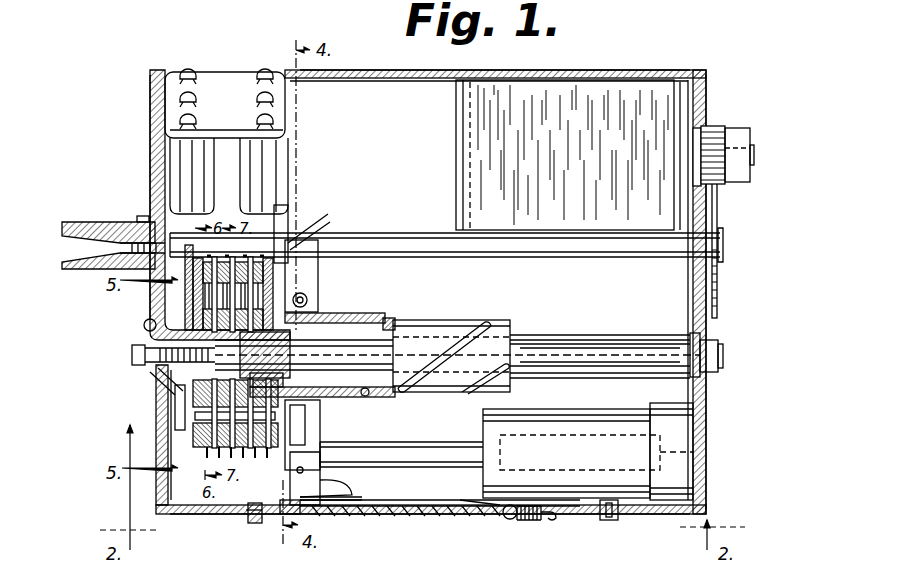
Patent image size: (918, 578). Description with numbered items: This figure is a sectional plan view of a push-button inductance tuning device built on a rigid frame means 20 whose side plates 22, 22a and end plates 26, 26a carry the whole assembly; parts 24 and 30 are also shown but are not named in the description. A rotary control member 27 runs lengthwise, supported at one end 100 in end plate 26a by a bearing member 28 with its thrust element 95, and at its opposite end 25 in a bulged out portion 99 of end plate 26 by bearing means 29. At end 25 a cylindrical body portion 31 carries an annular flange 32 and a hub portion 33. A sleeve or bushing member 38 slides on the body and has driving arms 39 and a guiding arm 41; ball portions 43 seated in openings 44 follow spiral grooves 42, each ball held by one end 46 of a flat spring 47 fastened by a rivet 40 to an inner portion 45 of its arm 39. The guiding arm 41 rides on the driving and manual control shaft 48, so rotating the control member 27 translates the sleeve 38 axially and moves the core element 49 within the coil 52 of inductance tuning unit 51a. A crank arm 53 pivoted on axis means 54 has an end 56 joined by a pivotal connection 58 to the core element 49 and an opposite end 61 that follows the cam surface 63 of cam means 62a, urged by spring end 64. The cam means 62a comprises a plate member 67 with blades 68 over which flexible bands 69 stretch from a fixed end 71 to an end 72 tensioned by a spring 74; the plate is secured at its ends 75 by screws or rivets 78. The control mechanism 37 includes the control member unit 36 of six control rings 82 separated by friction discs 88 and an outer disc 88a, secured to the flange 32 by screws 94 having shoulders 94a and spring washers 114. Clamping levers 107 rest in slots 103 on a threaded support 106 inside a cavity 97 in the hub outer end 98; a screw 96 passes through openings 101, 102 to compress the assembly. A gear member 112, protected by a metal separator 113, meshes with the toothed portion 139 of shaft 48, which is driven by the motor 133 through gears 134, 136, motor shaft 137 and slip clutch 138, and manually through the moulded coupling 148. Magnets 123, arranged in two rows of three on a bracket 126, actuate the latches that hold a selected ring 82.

The frame means 20 is at (707, 445).
The side plate 22 is at (648, 515).
The side plate 22a is at (545, 72).
The wall 24 is at (708, 94).
The end of control member 25 is at (322, 313).
The end plate 26 is at (151, 168).
The end plate 26a is at (707, 288).
The rotary control member 27 is at (562, 310).
The bearing member 28 is at (712, 342).
The bearing means 29 is at (175, 398).
The bushing 30 is at (345, 312).
The cylindrical body portion 31 is at (408, 300).
The annular flange 32 is at (318, 232).
The hub portion 33 is at (457, 355).
The control member unit 36 is at (250, 458).
The control mechanism 37 is at (290, 215).
The sleeve or bushing member 38 is at (308, 298).
The driving arm 39 is at (318, 430).
The rivet 40 is at (300, 390).
The guiding arm 41 is at (318, 272).
The spirally extending grooves 42 is at (492, 322).
The ball portion 43 is at (372, 396).
The recess or opening 44 is at (368, 398).
The inner portion of arm 45 is at (320, 388).
The end of spring 46 is at (352, 398).
The spring 47 is at (297, 425).
The driving and manual control shaft 48 is at (520, 258).
The core element 49 is at (412, 467).
The inductance tuning unit 51a is at (575, 418).
The coil 52 is at (571, 453).
The crank arm 53 is at (320, 472).
The axis means 54 is at (322, 502).
The end of crank arm 56 is at (283, 485).
The pivotal connection 58 is at (401, 454).
The end of crank arm 61 is at (339, 485).
The cam means 62a is at (430, 540).
The cam surface 63 is at (440, 494).
The end of spring 64 is at (269, 466).
The plate member 67 is at (600, 522).
The louvres or blades 68 is at (376, 517).
The flexible bands 69 is at (468, 500).
The end of band 71 is at (292, 516).
The end of band 72 is at (498, 516).
The spring 74 is at (535, 522).
The ends of plate 75 is at (258, 524).
The screws or rivets 78 is at (255, 524).
The control ring 82 is at (270, 496).
The separator or friction disc 88 is at (272, 262).
The outer separator disc 88a is at (195, 248).
The screw 94 is at (178, 440).
The shoulder portion 94a is at (108, 433).
The thrust element 95 is at (722, 366).
The screw 96 is at (132, 354).
The cavity 97 is at (255, 359).
The outer end of hub portion 98 is at (178, 322).
The bulged out portion 99 is at (144, 324).
The end of control shaft 100 is at (628, 348).
The opening 101 is at (148, 334).
The opening 102 is at (150, 375).
The slots 103 is at (185, 405).
The threaded support 106 is at (181, 300).
The clamping lever 107 is at (181, 459).
The gear member 112 is at (177, 272).
The metal separator 113 is at (178, 300).
The spring washer 114 is at (175, 420).
The magnet 123 is at (178, 152).
The bracket 126 is at (222, 72).
The motor 133 is at (568, 155).
The gear 134 is at (718, 213).
The gear 136 is at (714, 128).
The motor shaft 137 is at (754, 154).
The slip clutch 138 is at (696, 148).
The toothed portion 139 is at (142, 218).
The moulded coupling 148 is at (80, 222).